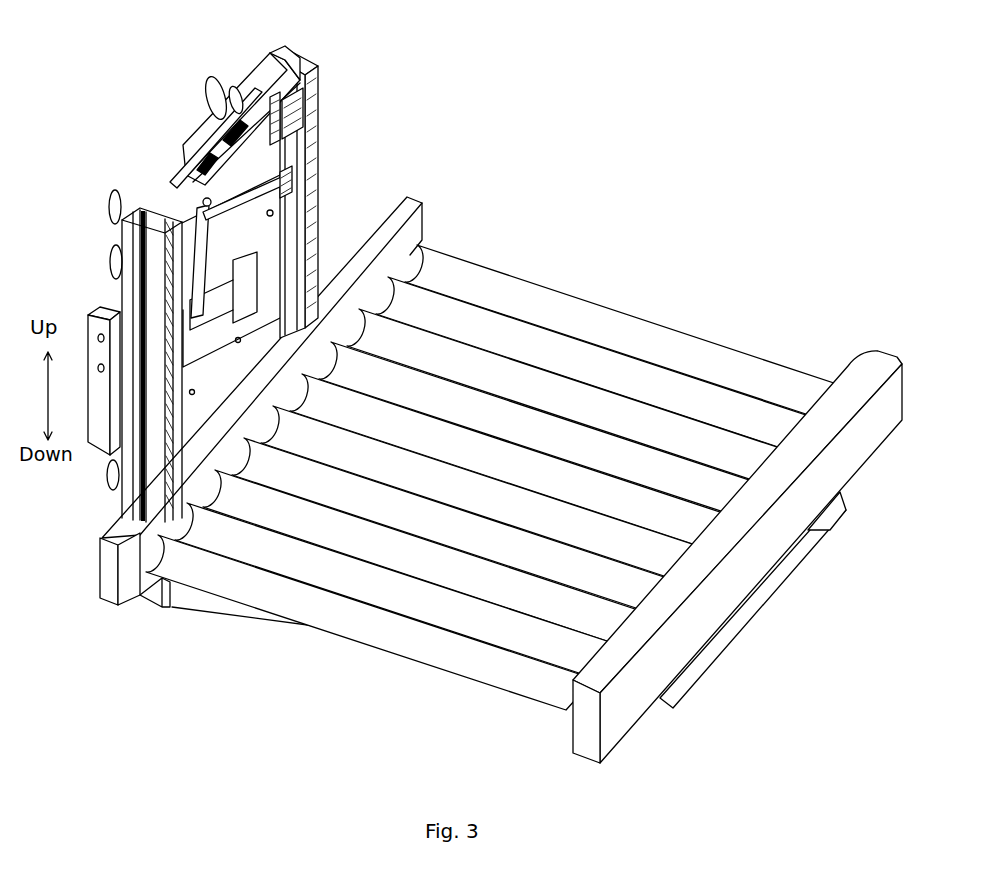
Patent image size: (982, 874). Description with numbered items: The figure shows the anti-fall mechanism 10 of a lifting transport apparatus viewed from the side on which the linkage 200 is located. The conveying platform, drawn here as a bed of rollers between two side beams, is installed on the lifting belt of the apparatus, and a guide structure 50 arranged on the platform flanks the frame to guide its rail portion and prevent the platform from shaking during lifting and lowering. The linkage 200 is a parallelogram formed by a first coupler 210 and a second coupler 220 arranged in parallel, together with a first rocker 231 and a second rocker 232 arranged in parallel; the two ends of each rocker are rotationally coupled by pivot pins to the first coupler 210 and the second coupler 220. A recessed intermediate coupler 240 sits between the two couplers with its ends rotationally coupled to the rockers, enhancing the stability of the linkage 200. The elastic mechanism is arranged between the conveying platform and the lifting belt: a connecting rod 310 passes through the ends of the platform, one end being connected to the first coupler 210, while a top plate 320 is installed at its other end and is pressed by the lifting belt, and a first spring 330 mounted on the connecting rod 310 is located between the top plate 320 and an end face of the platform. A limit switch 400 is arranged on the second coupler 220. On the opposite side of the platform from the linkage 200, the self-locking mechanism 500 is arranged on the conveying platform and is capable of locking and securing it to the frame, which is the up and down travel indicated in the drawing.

The anti-fall mechanism 10 is at (53, 140).
The guide structure 50 is at (203, 80).
The linkage 200 is at (272, 228).
The first coupler 210 is at (318, 117).
The second coupler 220 is at (185, 168).
The first rocker 231 is at (205, 278).
The second rocker 232 is at (283, 197).
The intermediate coupler 240 is at (157, 200).
The connecting rod 310 is at (282, 50).
The top plate 320 is at (200, 128).
The first spring 330 is at (233, 93).
The limit switch 400 is at (290, 180).
The self-locking mechanism 500 is at (97, 415).